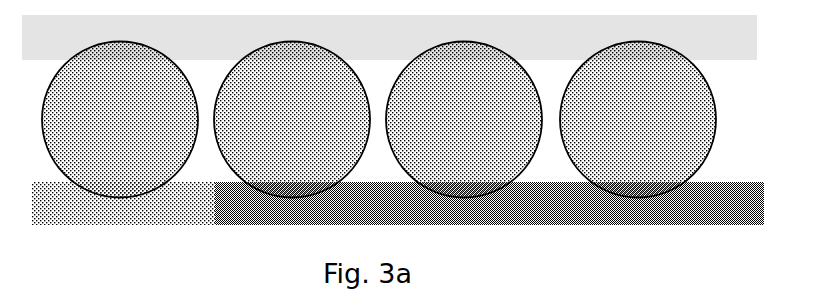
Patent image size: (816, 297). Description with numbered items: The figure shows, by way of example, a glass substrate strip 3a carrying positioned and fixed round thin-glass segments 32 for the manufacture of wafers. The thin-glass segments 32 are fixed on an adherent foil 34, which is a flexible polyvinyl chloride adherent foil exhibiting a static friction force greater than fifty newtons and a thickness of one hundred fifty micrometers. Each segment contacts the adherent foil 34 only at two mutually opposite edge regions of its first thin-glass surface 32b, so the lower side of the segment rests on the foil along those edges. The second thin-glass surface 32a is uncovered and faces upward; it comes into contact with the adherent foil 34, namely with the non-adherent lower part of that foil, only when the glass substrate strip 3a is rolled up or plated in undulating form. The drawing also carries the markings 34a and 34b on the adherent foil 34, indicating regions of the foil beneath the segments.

The glass substrate strip 3a is at (403, 149).
The thin-glass segments 32 is at (670, 120).
The second thin-glass surface 32a is at (690, 68).
The first thin-glass surface 32b is at (716, 107).
The adherent foil 34 is at (408, 223).
The upper surface layer of substrate 34a is at (654, 216).
The lower surface layer of substrate 34b is at (596, 211).